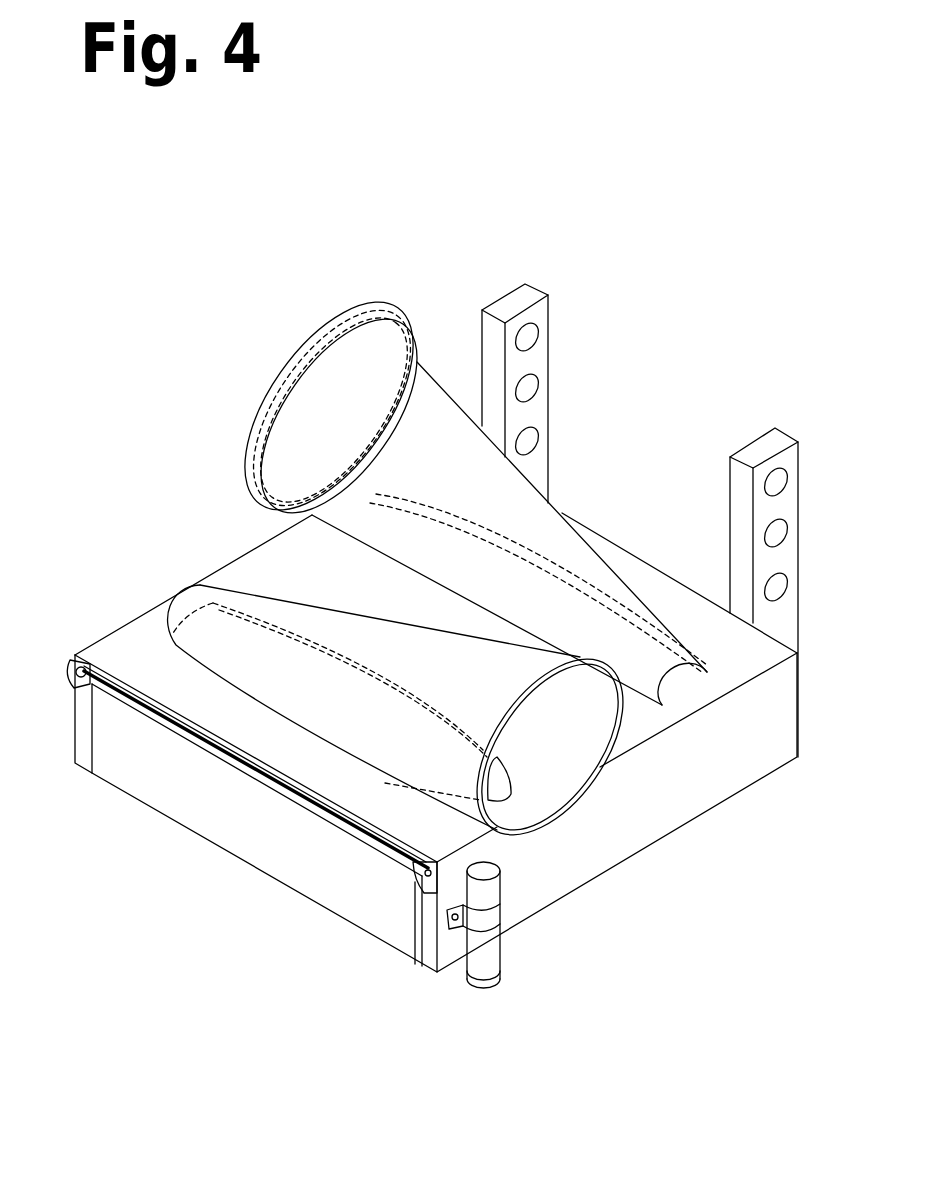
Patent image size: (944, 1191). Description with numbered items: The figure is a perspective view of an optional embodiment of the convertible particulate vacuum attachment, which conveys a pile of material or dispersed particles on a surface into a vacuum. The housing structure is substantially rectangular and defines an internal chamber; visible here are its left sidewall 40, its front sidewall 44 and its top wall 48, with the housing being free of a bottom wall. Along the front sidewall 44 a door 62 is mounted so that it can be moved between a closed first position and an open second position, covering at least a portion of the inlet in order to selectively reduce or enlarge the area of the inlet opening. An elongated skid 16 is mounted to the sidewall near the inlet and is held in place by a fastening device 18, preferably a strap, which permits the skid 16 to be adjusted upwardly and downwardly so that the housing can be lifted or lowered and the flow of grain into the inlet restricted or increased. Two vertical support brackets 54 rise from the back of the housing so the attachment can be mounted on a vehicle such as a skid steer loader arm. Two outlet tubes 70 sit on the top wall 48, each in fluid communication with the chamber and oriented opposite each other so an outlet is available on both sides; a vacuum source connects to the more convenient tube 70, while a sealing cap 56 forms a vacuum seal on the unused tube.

The elongated skid 16 is at (490, 950).
The fastening device 18 is at (477, 920).
The left sidewall 40 is at (683, 777).
The front sidewall 44 is at (85, 733).
The top wall 48 is at (152, 653).
The vertical support brackets 54 is at (525, 284).
The sealing cap 56 is at (267, 362).
The door 62 is at (255, 822).
The outlet tubes 70 is at (450, 397).